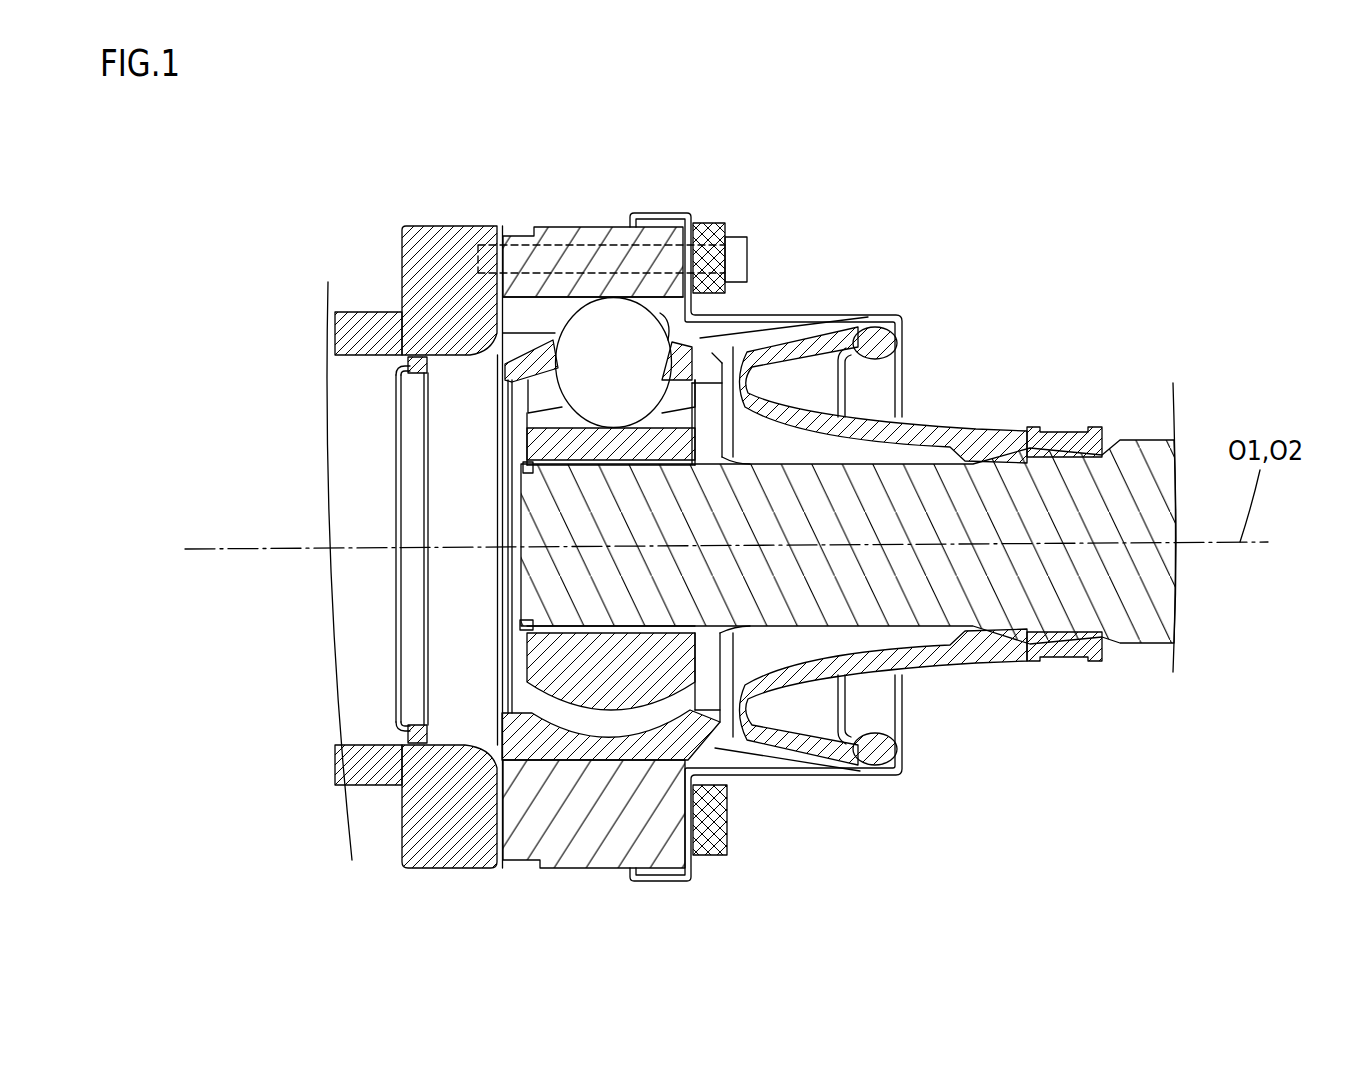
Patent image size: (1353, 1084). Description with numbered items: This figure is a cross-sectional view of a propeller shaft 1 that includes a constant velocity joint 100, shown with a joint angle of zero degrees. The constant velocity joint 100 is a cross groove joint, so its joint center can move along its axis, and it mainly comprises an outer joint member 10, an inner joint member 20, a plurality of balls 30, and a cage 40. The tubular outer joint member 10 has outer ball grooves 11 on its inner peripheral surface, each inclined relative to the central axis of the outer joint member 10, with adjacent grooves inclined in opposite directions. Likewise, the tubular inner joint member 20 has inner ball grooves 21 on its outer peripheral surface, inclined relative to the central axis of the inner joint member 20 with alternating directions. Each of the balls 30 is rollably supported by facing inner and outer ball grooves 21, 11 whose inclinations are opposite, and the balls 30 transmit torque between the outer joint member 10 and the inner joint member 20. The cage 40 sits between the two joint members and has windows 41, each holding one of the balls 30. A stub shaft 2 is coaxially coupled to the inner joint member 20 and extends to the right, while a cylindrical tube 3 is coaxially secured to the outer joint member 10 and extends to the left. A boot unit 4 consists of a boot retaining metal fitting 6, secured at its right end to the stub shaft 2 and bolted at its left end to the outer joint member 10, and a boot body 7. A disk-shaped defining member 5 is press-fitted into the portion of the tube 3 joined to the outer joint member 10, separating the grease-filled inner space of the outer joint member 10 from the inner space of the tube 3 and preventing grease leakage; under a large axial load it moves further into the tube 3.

The propeller shaft 1 is at (1152, 188).
The stub shaft 2 is at (1140, 620).
The tube 3 is at (372, 312).
The boot unit 4 is at (957, 742).
The defining member 5 is at (398, 697).
The boot retaining metal fitting 6 is at (845, 313).
The boot body 7 is at (958, 430).
The outer joint member 10 is at (593, 862).
The outer ball grooves 11 is at (563, 297).
The inner joint member 20 is at (545, 685).
The inner ball grooves 21 is at (703, 337).
The balls 30 is at (590, 315).
The cage 40 is at (687, 747).
The windows 41 is at (673, 430).
The constant velocity joint 100 is at (460, 212).